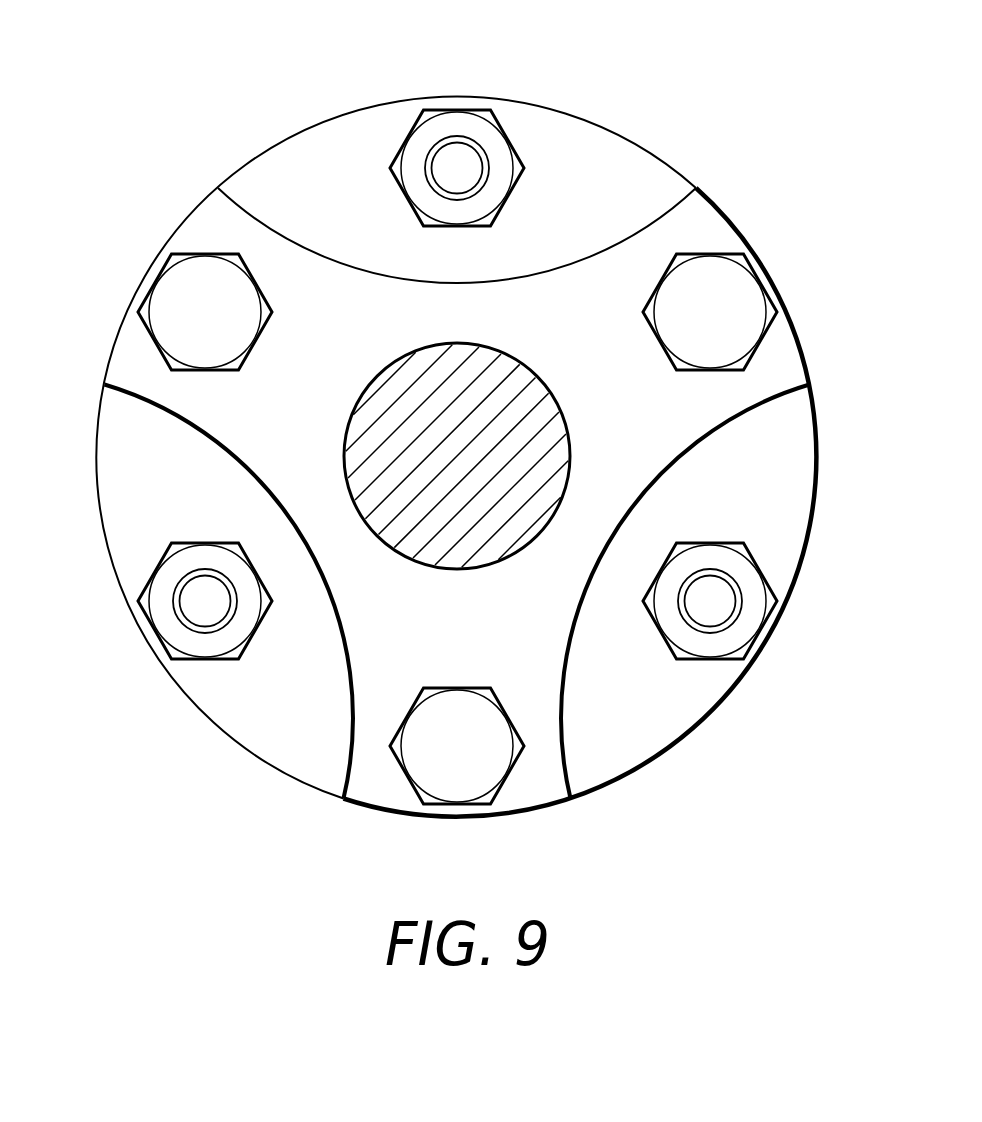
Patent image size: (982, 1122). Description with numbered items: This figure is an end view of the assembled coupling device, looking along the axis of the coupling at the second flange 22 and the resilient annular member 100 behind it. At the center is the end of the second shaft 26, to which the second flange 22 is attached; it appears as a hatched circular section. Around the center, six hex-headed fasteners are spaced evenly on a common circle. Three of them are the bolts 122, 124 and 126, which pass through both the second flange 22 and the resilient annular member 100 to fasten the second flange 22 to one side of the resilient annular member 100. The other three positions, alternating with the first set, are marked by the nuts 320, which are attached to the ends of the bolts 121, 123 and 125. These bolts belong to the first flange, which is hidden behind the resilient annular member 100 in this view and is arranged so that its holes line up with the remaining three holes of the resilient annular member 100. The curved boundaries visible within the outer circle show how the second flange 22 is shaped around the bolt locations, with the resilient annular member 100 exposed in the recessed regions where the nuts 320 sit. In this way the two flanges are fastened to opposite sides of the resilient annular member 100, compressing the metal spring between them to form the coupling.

The resilient annular member 100 is at (283, 140).
The second flange 22 is at (253, 447).
The second shaft 26 is at (530, 370).
The nuts 320 is at (522, 148).
The bolt 121 is at (458, 155).
The bolt 122 is at (732, 290).
The bolt 123 is at (708, 607).
The bolt 124 is at (455, 778).
The bolt 125 is at (195, 602).
The bolt 126 is at (172, 305).